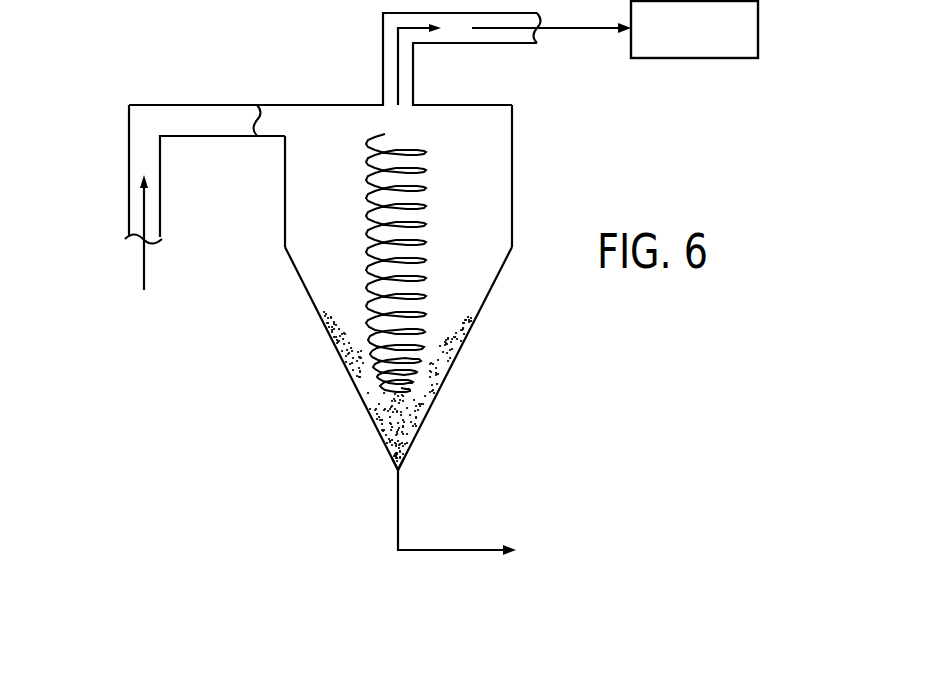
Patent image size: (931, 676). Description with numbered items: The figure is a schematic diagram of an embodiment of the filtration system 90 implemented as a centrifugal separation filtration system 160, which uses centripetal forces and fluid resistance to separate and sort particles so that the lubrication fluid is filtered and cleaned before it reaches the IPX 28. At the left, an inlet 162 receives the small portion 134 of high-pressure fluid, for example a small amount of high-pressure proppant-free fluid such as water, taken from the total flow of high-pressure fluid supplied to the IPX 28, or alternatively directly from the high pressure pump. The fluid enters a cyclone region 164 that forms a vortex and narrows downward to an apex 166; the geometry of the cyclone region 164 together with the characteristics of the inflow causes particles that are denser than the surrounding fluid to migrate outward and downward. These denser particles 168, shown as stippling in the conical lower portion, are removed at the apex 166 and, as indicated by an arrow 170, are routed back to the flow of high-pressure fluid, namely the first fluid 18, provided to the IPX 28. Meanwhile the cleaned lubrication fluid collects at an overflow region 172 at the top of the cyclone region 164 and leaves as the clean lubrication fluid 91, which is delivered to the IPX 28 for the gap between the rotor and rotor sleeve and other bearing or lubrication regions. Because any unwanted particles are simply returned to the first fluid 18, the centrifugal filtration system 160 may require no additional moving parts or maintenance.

The filtration system 90 is at (258, 30).
The centrifugal separation filtration system 160 is at (320, 325).
The IPX 28 is at (760, 30).
The clean lubrication fluid 91 is at (578, 30).
The inlet 162 is at (129, 172).
The small portion of high-pressure fluid 134 is at (144, 265).
The overflow region 172 is at (478, 165).
The cyclone region 164 is at (494, 339).
The denser particles 168 is at (410, 405).
The apex 166 is at (396, 472).
The arrow 170 is at (400, 508).
The first fluid 18 is at (446, 556).